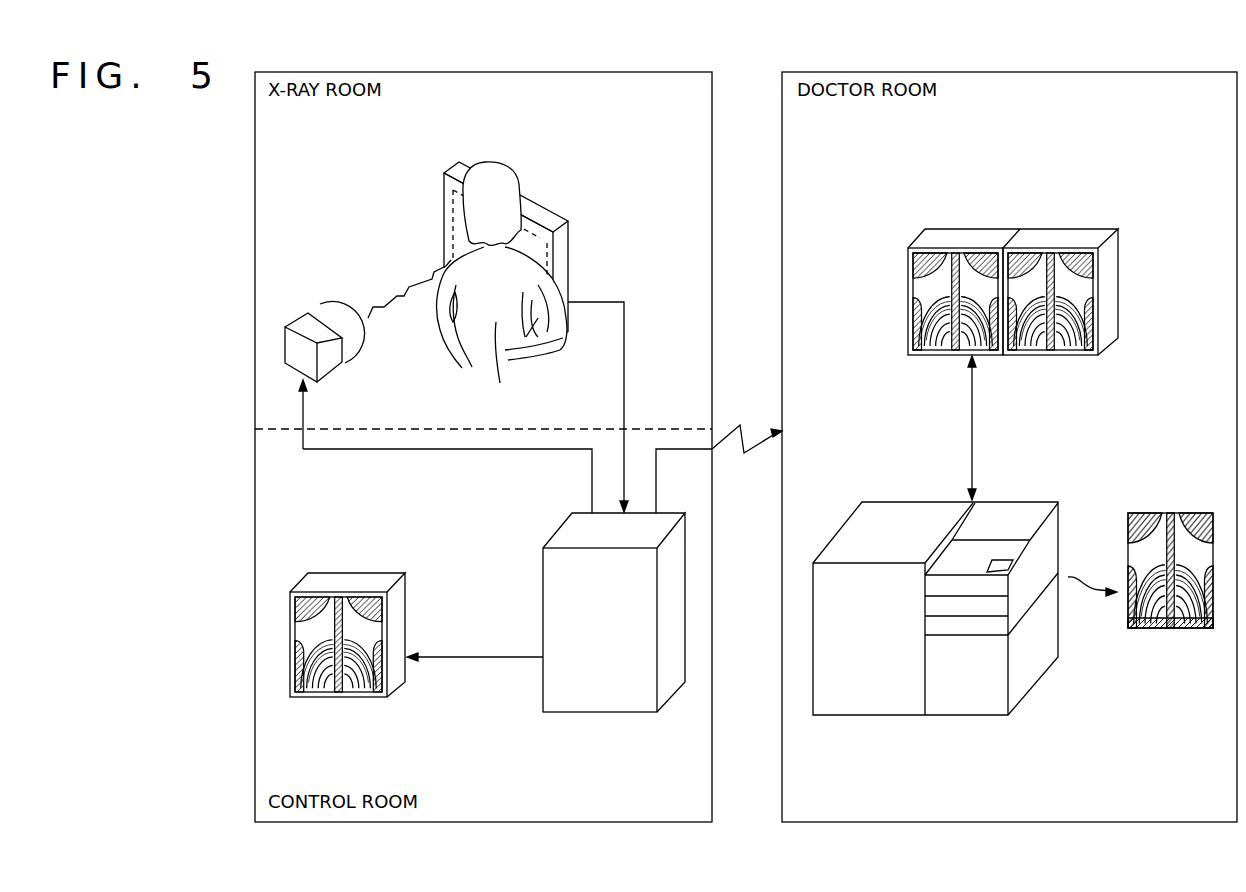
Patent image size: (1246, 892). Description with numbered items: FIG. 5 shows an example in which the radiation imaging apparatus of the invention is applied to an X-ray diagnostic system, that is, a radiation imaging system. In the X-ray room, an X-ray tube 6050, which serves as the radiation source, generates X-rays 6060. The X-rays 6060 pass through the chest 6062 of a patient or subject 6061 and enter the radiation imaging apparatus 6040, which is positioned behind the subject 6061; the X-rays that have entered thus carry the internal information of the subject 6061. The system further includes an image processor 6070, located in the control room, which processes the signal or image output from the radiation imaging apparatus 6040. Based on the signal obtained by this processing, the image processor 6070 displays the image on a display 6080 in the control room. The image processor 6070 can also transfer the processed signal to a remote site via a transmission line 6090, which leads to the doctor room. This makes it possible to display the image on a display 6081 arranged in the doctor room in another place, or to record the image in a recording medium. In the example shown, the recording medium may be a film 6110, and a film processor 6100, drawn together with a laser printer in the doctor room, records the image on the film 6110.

The radiation imaging apparatus 6040 is at (548, 216).
The X-ray tube 6050 is at (300, 313).
The X-rays 6060 is at (398, 300).
The subject 6061 is at (497, 163).
The chest 6062 is at (500, 386).
The image processor 6070 is at (543, 687).
The display 6080 is at (407, 609).
The display 6081 is at (938, 238).
The transmission line 6090 is at (742, 425).
The film processor 6100 is at (905, 502).
The film 6110 is at (1170, 513).